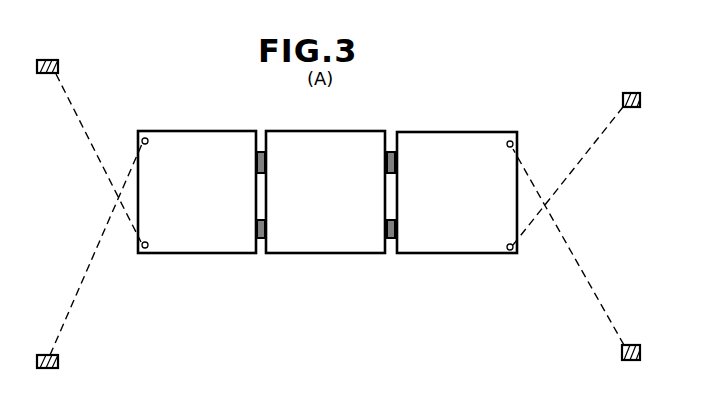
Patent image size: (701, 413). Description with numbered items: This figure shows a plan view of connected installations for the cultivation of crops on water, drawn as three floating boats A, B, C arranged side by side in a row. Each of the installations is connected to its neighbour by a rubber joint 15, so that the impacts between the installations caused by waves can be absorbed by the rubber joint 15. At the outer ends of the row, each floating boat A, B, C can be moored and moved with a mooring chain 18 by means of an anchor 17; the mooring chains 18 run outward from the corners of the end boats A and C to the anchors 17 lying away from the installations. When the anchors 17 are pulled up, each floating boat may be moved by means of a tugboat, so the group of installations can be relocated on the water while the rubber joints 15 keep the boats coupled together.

The rubber joint 15 is at (392, 152).
The anchor 17 is at (47, 75).
The mooring chain 18 is at (86, 122).
The floating boat A is at (210, 254).
The floating boat B is at (337, 254).
The floating boat C is at (455, 254).